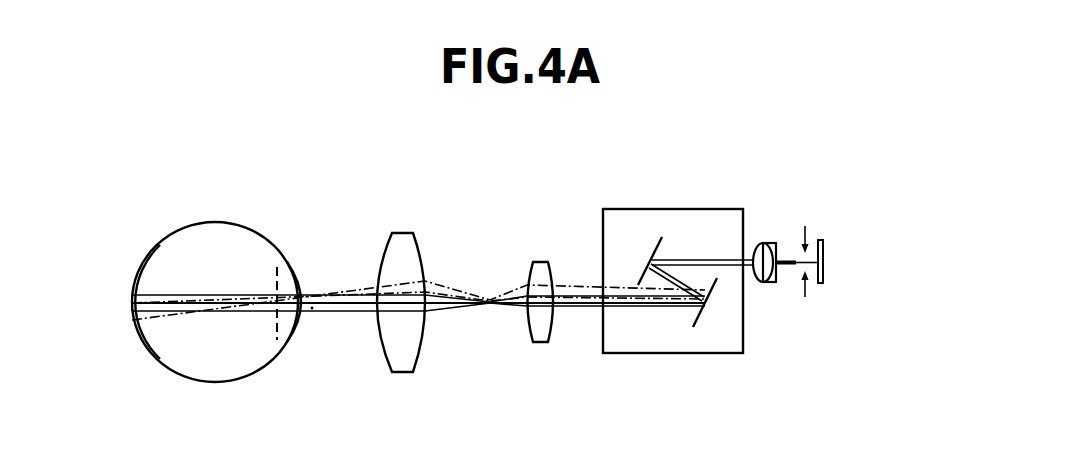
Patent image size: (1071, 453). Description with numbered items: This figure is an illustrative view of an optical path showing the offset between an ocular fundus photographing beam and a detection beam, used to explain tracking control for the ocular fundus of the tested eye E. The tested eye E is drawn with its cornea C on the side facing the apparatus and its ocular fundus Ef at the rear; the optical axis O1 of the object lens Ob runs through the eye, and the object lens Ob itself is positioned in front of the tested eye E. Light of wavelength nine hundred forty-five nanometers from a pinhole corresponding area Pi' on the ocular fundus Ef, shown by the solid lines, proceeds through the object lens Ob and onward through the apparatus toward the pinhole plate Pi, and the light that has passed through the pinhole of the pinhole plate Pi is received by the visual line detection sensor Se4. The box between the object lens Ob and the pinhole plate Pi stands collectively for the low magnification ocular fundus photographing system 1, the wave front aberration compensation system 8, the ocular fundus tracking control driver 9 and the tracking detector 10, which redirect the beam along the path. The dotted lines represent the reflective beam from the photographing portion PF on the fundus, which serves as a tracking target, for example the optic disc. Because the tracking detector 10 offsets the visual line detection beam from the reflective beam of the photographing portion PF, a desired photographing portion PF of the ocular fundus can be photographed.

The tested eye E is at (227, 223).
The ocular fundus Ef is at (145, 258).
The cornea C is at (293, 277).
The pinhole corresponding area Pi' is at (90, 293).
The photographing portion PF is at (132, 318).
The optical axis O1 is at (312, 310).
The object lens Ob is at (402, 233).
The low magnification ocular fundus photographing system 1 is at (678, 241).
The wave front aberration compensation system 8 is at (650, 261).
The ocular fundus tracking control driver 9 is at (705, 302).
The tracking detector 10 is at (701, 280).
The pinhole plate Pi is at (823, 228).
The visual line detection sensor Se4 is at (824, 242).